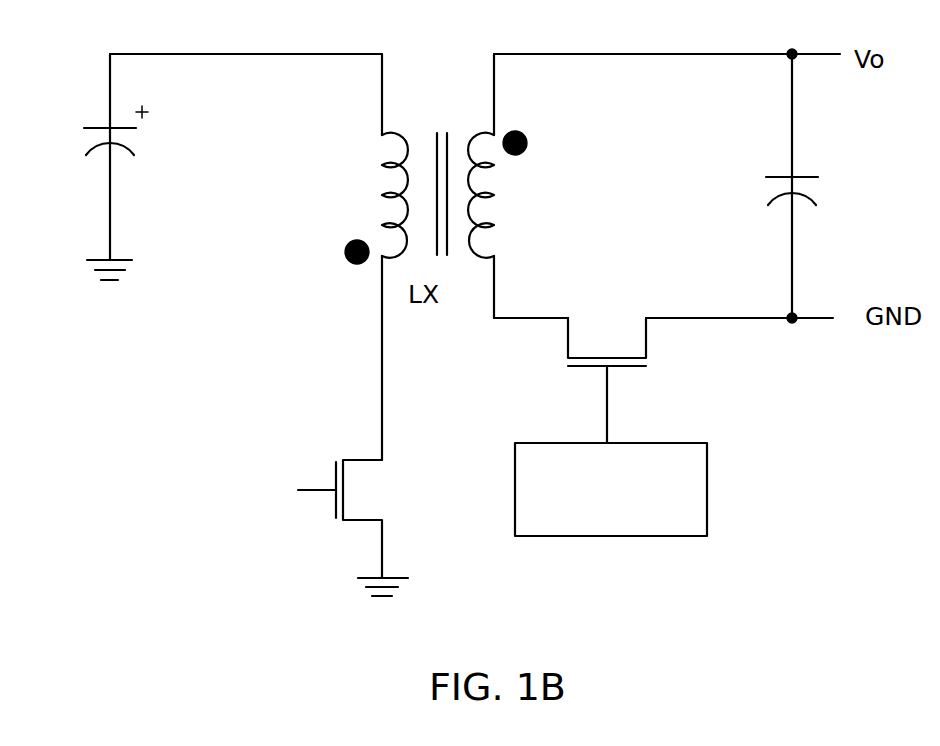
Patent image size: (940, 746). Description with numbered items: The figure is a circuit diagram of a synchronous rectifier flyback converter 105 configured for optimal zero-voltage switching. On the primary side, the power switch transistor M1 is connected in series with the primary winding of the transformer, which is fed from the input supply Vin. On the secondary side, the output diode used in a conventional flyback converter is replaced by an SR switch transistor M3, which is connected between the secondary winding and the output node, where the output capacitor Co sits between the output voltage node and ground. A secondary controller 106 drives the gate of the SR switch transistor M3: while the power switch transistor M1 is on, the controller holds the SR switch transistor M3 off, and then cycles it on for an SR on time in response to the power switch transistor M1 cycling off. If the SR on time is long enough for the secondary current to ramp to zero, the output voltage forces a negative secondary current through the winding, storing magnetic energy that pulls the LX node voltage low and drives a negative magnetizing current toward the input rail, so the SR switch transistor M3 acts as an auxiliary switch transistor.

The synchronous rectifier flyback converter 105 is at (469, 34).
The secondary controller 106 is at (707, 490).
The power switch transistor M1 is at (363, 528).
The SR switch transistor M3 is at (607, 364).
The output capacitor Co is at (813, 186).
The input voltage source Vin is at (91, 167).